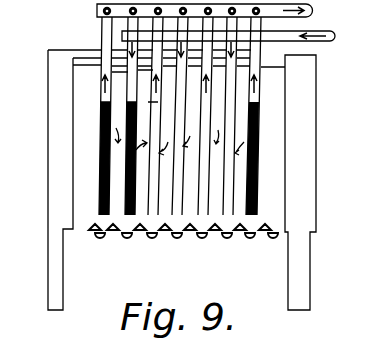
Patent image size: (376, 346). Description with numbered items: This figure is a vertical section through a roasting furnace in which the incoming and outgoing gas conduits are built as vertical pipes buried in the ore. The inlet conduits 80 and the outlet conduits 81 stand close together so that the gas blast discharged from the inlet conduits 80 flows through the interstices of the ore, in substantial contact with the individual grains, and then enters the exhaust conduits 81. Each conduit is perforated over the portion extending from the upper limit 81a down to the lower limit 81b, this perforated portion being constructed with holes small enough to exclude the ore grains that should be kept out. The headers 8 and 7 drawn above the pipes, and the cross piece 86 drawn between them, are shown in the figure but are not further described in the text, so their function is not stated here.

The upper header pipe 8 is at (97, 11).
The lower header pipe 7 is at (309, 33).
The outlet conduit 81 is at (102, 31).
The cross strut 86 is at (108, 72).
The inlet conduit 80 is at (228, 162).
The upper end of perforated portion 81a is at (102, 102).
The lower end of perforated portion 81b is at (95, 210).